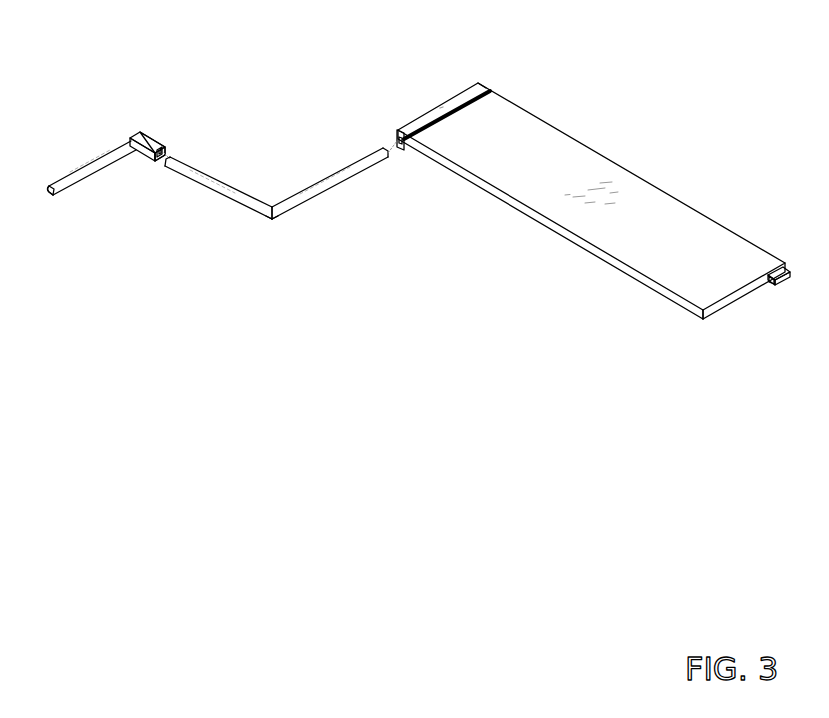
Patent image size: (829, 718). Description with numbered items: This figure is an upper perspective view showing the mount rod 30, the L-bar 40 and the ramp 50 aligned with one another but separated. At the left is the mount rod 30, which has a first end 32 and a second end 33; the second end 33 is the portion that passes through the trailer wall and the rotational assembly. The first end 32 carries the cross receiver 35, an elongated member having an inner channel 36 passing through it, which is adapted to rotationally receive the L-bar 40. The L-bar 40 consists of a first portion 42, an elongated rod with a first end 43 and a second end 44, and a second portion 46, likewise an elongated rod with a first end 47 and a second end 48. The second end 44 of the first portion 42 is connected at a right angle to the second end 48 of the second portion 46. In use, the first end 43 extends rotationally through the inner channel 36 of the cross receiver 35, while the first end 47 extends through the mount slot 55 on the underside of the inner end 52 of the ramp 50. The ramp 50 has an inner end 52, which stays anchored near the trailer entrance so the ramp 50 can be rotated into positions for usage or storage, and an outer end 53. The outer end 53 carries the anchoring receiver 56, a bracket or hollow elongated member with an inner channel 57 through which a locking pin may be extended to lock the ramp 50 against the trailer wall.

The mount rod 30 is at (90, 163).
The first end 32 is at (132, 138).
The second end 33 is at (48, 197).
The cross receiver 35 is at (153, 136).
The inner channel 36 is at (158, 157).
The L-bar 40 is at (286, 198).
The first portion 42 is at (222, 183).
The first end 43 is at (177, 155).
The second end 44 is at (268, 220).
The second portion 46 is at (333, 190).
The first end 47 is at (383, 152).
The second end 48 is at (277, 221).
The ramp 50 is at (610, 158).
The inner end 52 is at (452, 97).
The outer end 53 is at (715, 318).
The mount slot 55 is at (398, 140).
The anchoring receiver 56 is at (785, 262).
The inner channel 57 is at (768, 287).